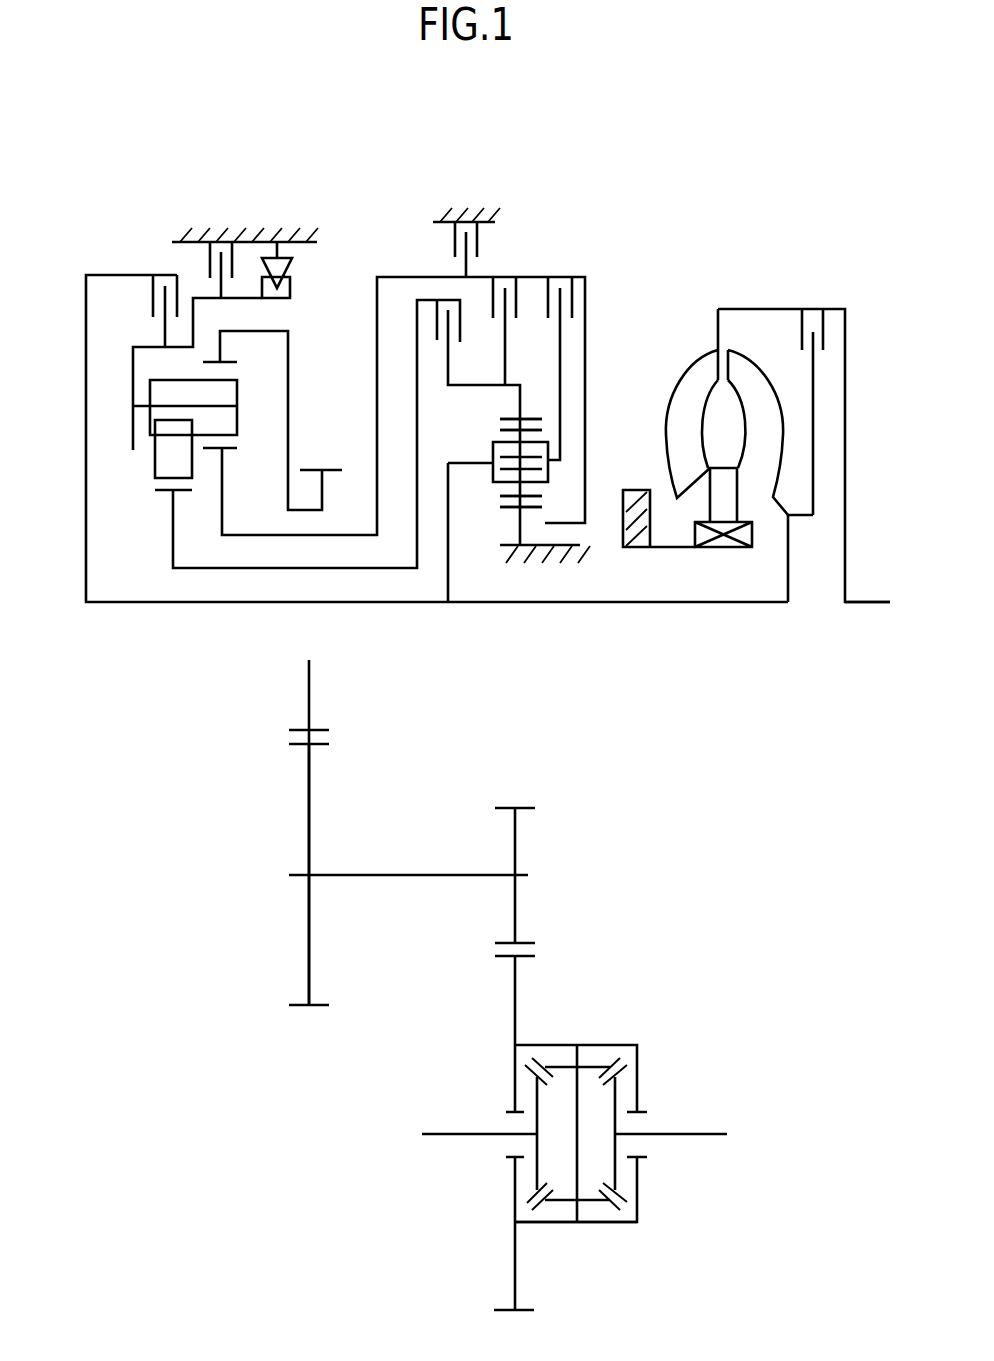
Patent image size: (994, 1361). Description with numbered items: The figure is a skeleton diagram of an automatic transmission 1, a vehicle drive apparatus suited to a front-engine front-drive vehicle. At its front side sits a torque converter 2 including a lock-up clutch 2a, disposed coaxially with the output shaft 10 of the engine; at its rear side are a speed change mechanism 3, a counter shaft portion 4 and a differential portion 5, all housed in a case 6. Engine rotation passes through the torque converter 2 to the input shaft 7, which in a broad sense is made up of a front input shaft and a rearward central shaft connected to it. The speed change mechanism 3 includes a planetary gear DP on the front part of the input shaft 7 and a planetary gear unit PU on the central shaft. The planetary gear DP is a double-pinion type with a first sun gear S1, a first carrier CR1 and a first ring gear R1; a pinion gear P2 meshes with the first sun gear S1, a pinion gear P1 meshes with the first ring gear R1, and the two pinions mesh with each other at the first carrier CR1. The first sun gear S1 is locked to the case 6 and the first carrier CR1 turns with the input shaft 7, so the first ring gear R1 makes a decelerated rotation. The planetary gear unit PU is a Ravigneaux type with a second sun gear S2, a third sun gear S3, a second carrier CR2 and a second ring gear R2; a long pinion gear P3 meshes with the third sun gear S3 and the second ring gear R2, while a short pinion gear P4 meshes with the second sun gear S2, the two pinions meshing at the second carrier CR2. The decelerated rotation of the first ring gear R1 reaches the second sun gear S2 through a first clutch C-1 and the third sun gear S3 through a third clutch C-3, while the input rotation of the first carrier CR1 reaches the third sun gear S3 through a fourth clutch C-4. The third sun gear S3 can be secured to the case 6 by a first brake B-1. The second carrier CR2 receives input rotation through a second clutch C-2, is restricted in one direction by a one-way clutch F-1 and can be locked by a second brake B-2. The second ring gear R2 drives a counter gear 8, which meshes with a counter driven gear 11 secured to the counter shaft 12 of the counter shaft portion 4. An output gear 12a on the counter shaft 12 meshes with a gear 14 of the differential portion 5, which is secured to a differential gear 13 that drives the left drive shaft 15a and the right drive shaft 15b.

The automatic transmission 1 is at (651, 200).
The torque converter 2 is at (725, 296).
The lock-up clutch 2a is at (824, 340).
The speed change mechanism 3 is at (367, 224).
The counter shaft portion 4 is at (291, 856).
The differential portion 5 is at (660, 1031).
The case 6 is at (178, 233).
The input shaft 7 is at (563, 604).
The counter gear 8 is at (327, 470).
The output shaft 10 is at (863, 600).
The counter driven gear 11 is at (312, 805).
The counter shaft 12 is at (400, 878).
The output gear 12a is at (518, 848).
The differential gear 13 is at (612, 1225).
The gear 14 is at (518, 1006).
The left drive shaft 15a is at (448, 1138).
The right drive shaft 15b is at (700, 1138).
The planetary gear unit PU is at (120, 385).
The planetary gear DP is at (538, 403).
The first carrier CR1 is at (550, 470).
The second carrier CR2 is at (131, 383).
The first ring gear R1 is at (510, 417).
The second ring gear R2 is at (240, 346).
The pinion gear P1 is at (510, 432).
The pinion gear P2 is at (512, 495).
The long pinion gear P3 is at (237, 395).
The short pinion gear P4 is at (155, 460).
The first sun gear S1 is at (508, 510).
The second sun gear S2 is at (163, 494).
The third sun gear S3 is at (226, 452).
The first clutch C-1 is at (478, 422).
The second clutch C-2 is at (168, 294).
The third clutch C-3 is at (506, 316).
The fourth clutch C-4 is at (560, 353).
The first brake B-1 is at (464, 228).
The second brake B-2 is at (217, 245).
The one-way clutch F-1 is at (274, 245).